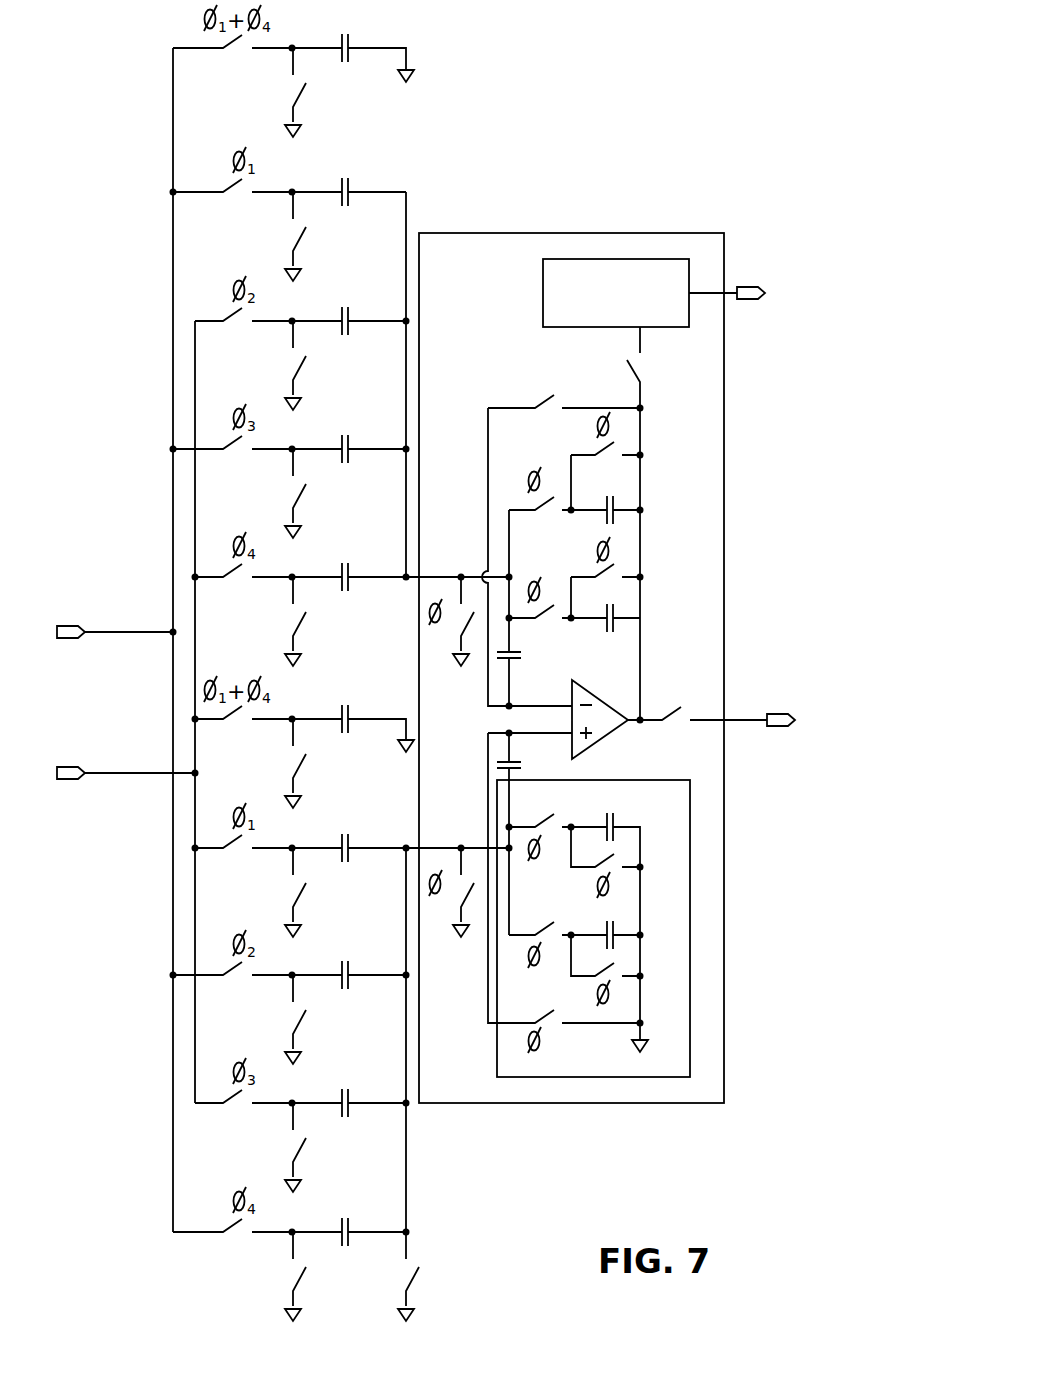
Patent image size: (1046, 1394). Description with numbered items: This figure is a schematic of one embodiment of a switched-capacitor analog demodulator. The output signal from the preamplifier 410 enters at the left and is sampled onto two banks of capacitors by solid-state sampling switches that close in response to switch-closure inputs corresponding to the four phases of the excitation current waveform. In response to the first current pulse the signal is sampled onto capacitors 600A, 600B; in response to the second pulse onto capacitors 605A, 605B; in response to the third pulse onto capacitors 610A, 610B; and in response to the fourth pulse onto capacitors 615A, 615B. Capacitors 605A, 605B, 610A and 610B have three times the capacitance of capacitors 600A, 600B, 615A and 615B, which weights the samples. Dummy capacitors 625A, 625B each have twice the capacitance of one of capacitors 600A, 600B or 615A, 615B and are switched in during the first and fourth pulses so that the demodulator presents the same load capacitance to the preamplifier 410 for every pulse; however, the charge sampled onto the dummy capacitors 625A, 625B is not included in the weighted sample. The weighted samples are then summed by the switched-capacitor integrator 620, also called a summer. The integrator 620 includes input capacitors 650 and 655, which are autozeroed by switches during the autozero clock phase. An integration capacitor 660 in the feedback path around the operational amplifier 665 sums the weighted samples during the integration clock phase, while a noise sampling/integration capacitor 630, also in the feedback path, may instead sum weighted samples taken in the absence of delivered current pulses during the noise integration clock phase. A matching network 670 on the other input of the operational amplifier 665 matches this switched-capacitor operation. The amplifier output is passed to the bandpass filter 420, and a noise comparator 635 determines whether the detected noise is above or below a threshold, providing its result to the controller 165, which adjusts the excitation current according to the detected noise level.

The capacitor 600A is at (351, 201).
The capacitor 605A is at (351, 330).
The capacitor 610A is at (351, 458).
The capacitor 615A is at (351, 586).
The dummy capacitor 625A is at (351, 57).
The capacitor 600B is at (351, 857).
The capacitor 605B is at (351, 984).
The capacitor 610B is at (351, 1112).
The capacitor 615B is at (351, 1241).
The dummy capacitor 625B is at (351, 728).
The switched-capacitor integrator 620 is at (656, 643).
The noise comparator 635 is at (543, 291).
The noise sampling/integration capacitor 630 is at (616, 503).
The integration capacitor 660 is at (618, 606).
The input capacitor 650 is at (531, 660).
The input capacitor 655 is at (542, 767).
The operational amplifier 665 is at (609, 700).
The matching network 670 is at (627, 780).
The preamplifier 410 is at (109, 702).
The controller 165 is at (793, 294).
The bandpass filter 420 is at (837, 695).